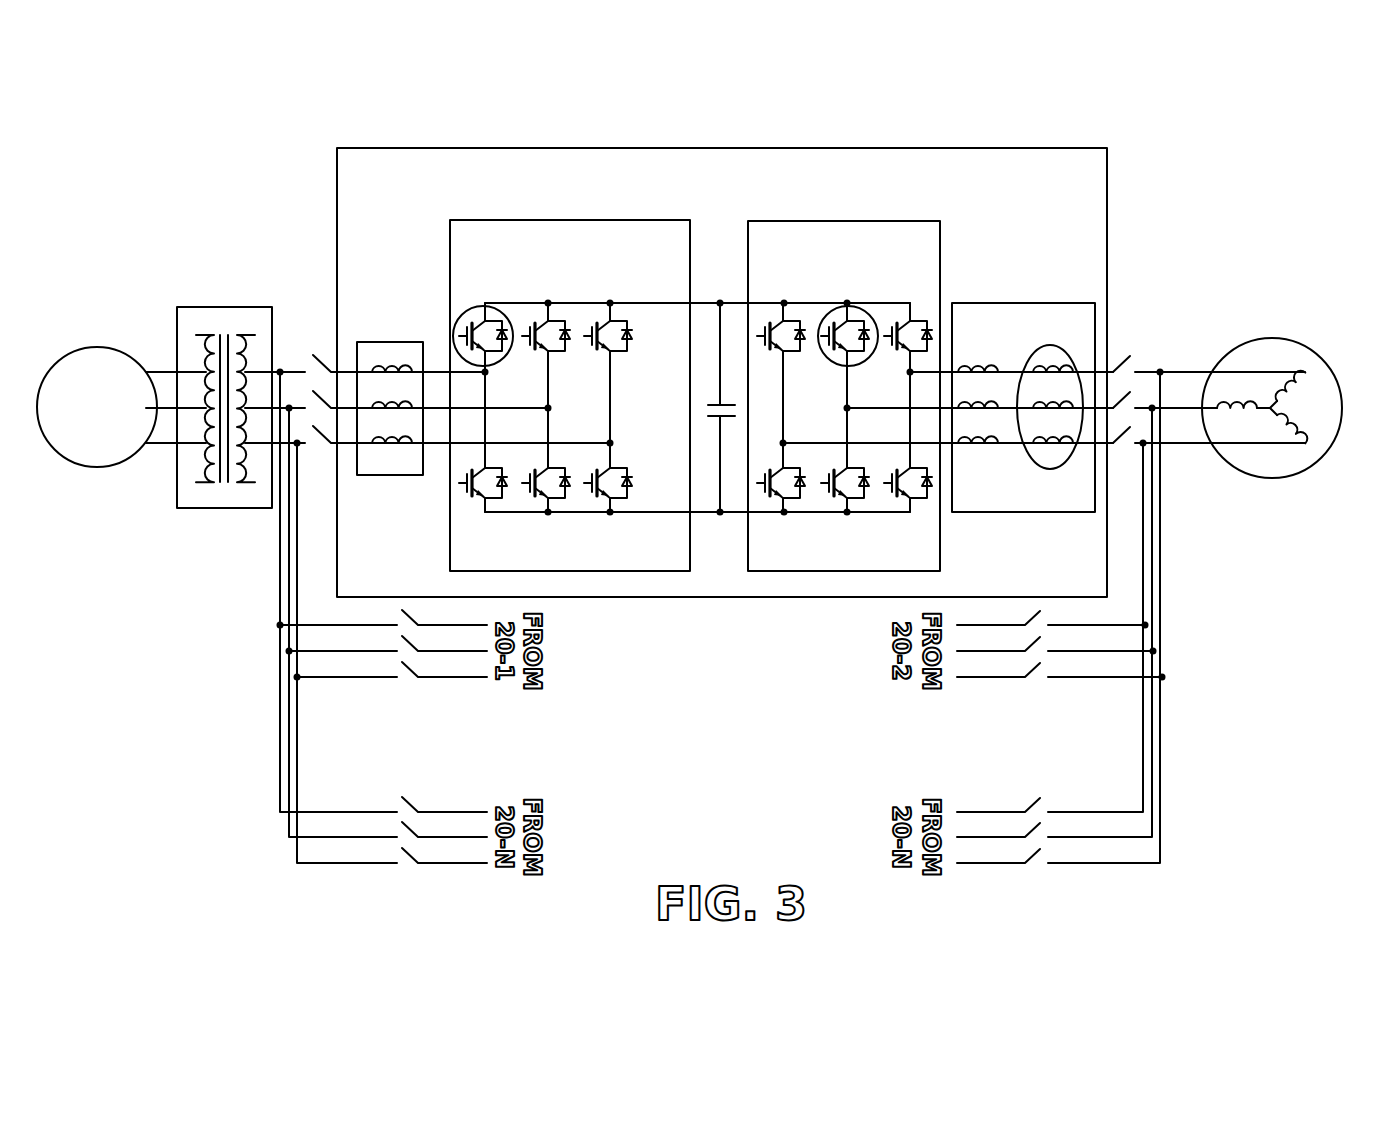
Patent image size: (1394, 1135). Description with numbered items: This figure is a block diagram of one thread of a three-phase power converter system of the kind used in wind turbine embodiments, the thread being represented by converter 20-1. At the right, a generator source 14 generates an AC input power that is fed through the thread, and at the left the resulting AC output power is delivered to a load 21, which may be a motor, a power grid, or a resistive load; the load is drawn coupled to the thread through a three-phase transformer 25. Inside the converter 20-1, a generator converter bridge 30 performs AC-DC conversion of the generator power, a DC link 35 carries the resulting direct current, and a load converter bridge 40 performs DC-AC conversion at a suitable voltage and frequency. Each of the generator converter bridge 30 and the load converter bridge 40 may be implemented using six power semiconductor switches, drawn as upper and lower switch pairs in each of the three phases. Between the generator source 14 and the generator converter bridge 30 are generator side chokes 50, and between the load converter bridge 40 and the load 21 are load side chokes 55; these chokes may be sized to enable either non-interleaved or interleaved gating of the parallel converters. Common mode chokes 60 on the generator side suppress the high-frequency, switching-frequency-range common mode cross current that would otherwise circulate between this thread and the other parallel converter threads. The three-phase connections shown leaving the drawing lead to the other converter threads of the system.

The generator source 14 is at (1300, 344).
The converter 20-1 is at (1048, 148).
The load 21 is at (97, 467).
The three-phase transformer 25 is at (224, 508).
The generator converter bridge 30 is at (844, 365).
The DC link 35 is at (712, 404).
The load converter bridge 40 is at (570, 365).
The generator side chokes 50 is at (977, 365).
The load side chokes 55 is at (387, 342).
The common mode chokes 60 is at (1050, 469).